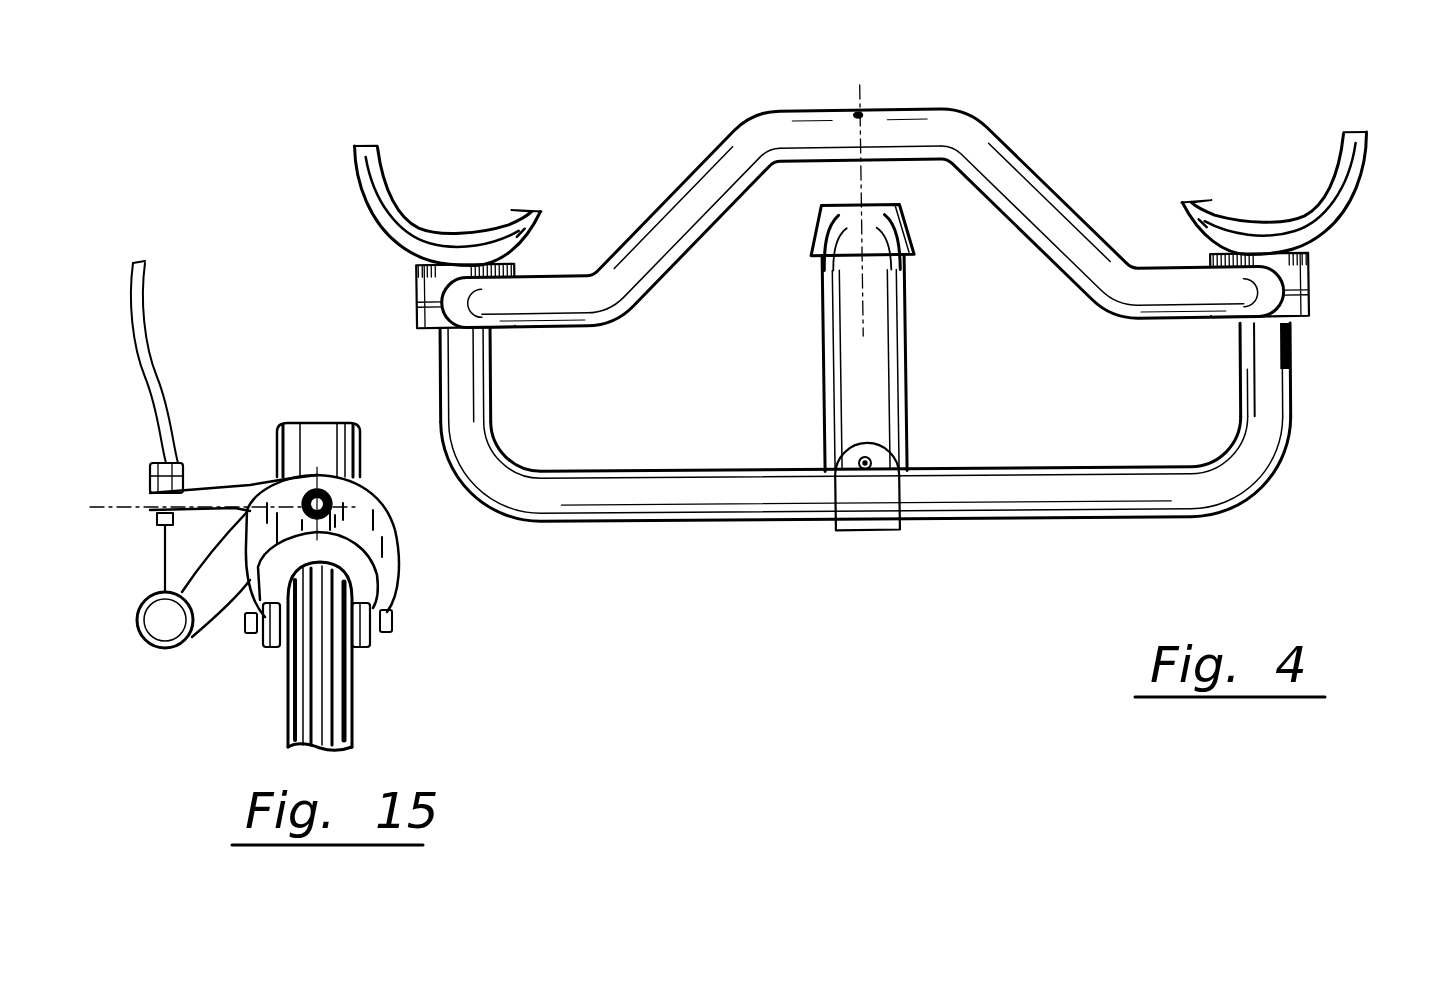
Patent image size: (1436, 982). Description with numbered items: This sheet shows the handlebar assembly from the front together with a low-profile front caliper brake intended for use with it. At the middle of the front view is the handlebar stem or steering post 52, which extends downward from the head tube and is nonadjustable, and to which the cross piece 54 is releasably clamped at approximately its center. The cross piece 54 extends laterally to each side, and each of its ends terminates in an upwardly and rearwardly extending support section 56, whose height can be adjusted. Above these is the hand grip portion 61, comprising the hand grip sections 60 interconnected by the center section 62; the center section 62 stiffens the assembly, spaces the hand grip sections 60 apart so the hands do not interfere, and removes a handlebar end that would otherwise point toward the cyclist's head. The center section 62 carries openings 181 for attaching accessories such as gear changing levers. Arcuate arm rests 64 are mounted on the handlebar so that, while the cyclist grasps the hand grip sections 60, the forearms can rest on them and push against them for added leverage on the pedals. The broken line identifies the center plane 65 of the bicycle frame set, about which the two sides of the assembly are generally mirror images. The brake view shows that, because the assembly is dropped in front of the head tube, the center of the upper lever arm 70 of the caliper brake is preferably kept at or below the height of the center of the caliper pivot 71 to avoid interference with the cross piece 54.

In FIG. 4, the handlebar stem 52 is at (914, 361).
In FIG. 4, the cross piece 54 is at (722, 468).
In FIG. 4, the support section 56 is at (480, 383).
In FIG. 4, the hand grip section 60 is at (708, 200).
In FIG. 4, the hand grip portion 61 is at (1050, 92).
In FIG. 4, the center section 62 is at (884, 110).
In FIG. 4, the arm rest 64 is at (390, 258).
In FIG. 4, the center plane 65 is at (867, 330).
In FIG. 4, the opening 181 is at (864, 113).
In FIG. 15, the upper lever arm 70 is at (228, 485).
In FIG. 15, the caliper pivot 71 is at (332, 495).